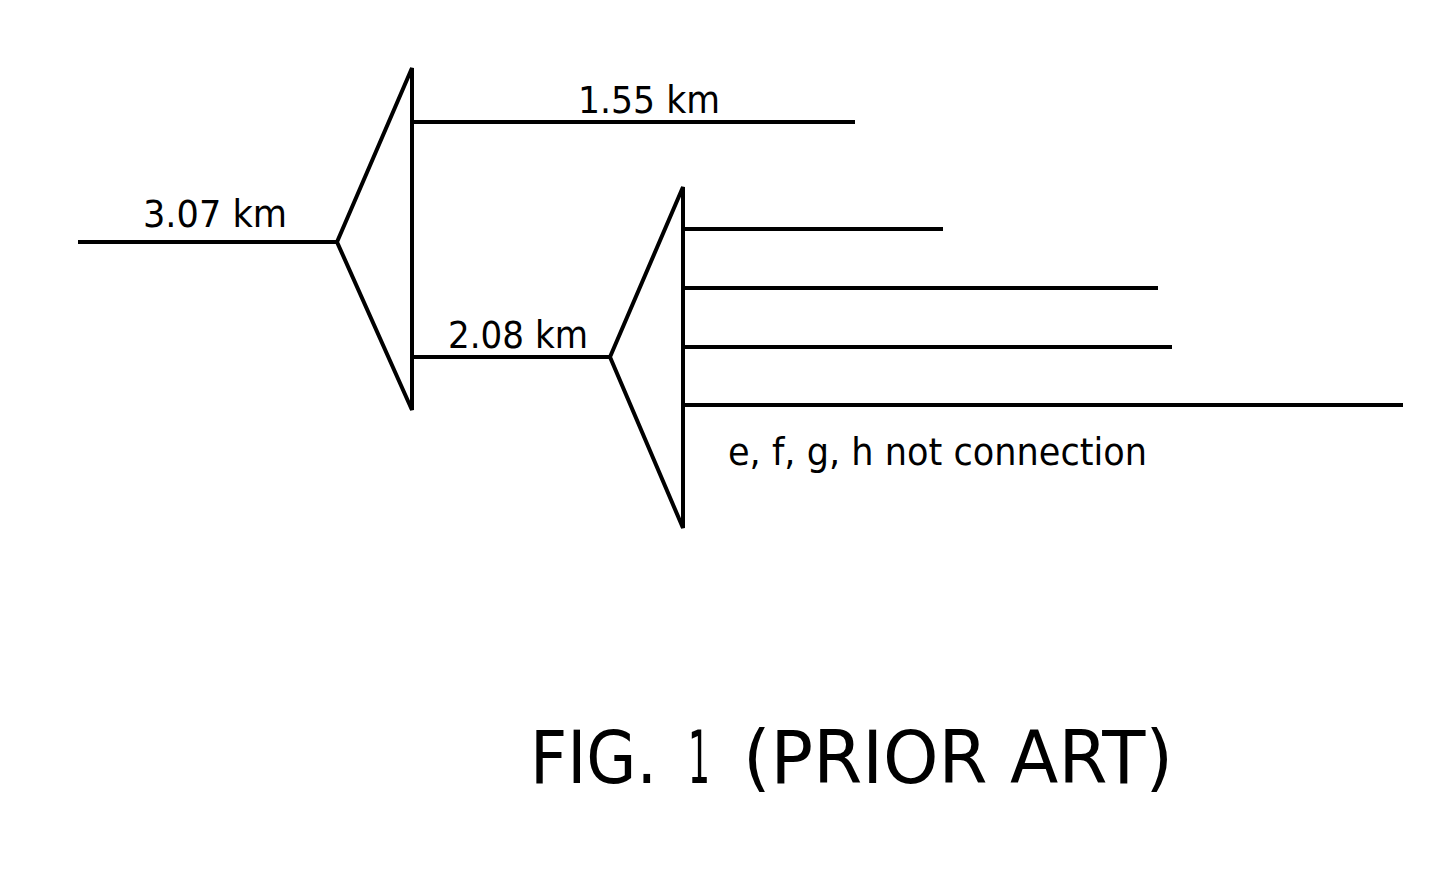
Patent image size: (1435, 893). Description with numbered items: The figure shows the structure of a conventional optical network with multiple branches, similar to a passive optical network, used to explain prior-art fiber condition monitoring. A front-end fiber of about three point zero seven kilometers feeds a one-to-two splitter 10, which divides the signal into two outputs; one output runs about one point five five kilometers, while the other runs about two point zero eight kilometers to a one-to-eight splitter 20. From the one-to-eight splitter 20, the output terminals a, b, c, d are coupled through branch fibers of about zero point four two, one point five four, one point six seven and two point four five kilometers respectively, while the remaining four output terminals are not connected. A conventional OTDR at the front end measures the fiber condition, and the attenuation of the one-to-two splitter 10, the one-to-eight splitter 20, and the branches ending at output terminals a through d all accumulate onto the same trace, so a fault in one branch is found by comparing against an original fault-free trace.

The 1:2 splitter 10 is at (372, 158).
The 1:8 splitter 20 is at (653, 450).
The output terminal a is at (813, 206).
The output terminal b is at (920, 264).
The output terminal c is at (927, 322).
The output terminal d is at (1043, 381).